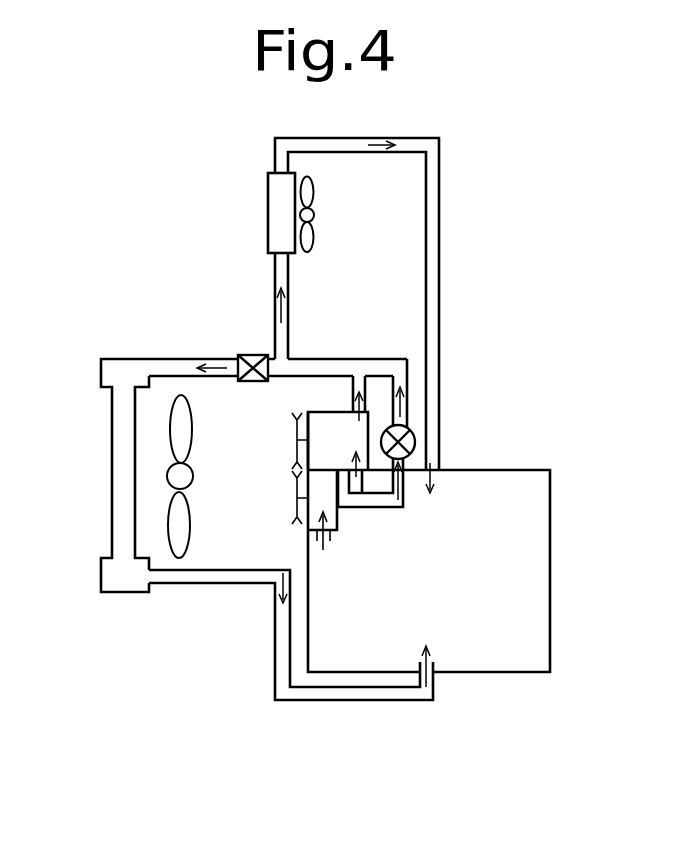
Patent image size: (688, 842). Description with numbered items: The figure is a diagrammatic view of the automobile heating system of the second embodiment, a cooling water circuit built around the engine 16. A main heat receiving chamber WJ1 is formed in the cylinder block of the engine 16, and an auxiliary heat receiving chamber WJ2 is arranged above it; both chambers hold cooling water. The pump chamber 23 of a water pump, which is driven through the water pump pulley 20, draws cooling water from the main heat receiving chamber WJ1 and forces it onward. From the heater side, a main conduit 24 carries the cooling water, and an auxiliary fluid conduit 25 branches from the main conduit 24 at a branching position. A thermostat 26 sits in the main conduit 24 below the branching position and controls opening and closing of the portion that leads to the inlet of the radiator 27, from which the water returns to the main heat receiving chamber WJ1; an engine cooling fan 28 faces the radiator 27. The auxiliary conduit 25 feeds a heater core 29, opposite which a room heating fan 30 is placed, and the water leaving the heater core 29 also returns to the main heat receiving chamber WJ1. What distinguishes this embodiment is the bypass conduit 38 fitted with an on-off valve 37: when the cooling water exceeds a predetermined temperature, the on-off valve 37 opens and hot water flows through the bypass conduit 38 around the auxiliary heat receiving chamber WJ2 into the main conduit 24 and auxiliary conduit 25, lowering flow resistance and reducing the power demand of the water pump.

The engine 16 is at (550, 596).
The water pump pulley 20 is at (292, 496).
The pump chamber 23 is at (333, 517).
The main conduit 24 is at (341, 359).
The auxiliary fluid conduit 25 is at (288, 302).
The thermostat 26 is at (253, 355).
The radiator 27 is at (112, 473).
The engine cooling fan 28 is at (187, 538).
The heater core 29 is at (267, 210).
The room heating fan 30 is at (313, 230).
The on-off valve 37 is at (413, 428).
The bypass conduit 38 is at (407, 387).
The main heat receiving chamber WJ1 is at (463, 505).
The auxiliary heat receiving chamber WJ2 is at (337, 417).